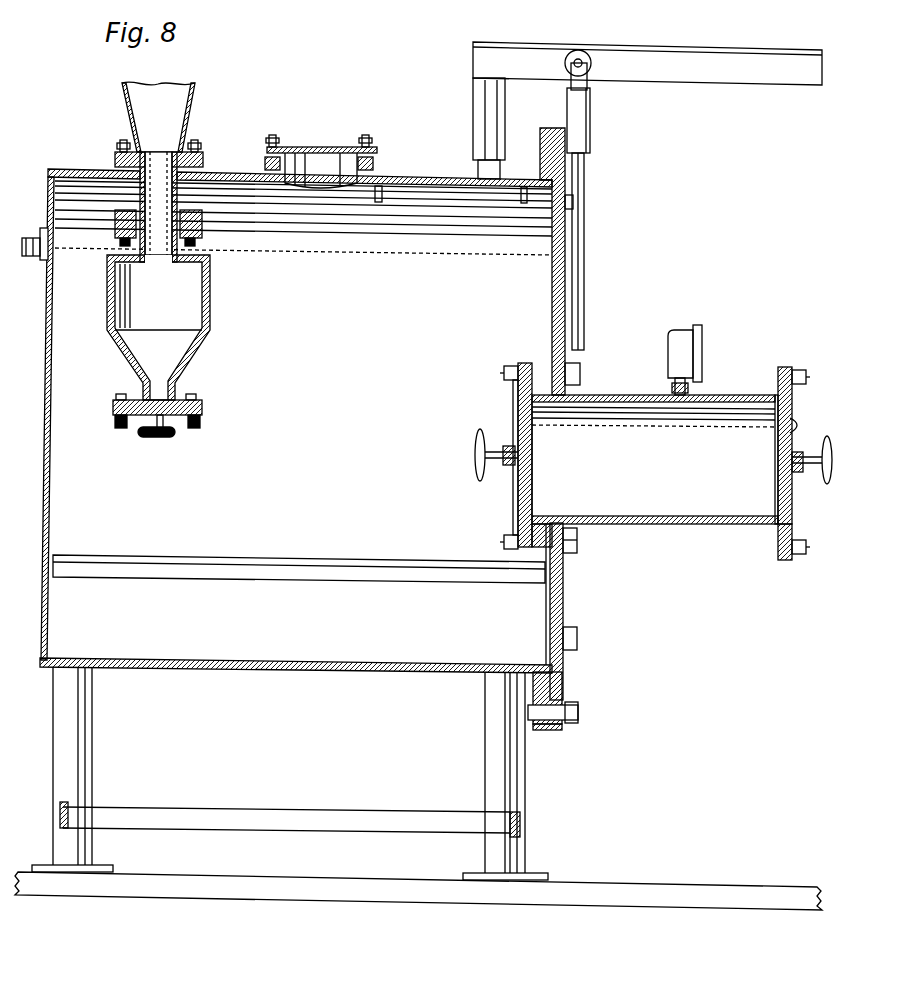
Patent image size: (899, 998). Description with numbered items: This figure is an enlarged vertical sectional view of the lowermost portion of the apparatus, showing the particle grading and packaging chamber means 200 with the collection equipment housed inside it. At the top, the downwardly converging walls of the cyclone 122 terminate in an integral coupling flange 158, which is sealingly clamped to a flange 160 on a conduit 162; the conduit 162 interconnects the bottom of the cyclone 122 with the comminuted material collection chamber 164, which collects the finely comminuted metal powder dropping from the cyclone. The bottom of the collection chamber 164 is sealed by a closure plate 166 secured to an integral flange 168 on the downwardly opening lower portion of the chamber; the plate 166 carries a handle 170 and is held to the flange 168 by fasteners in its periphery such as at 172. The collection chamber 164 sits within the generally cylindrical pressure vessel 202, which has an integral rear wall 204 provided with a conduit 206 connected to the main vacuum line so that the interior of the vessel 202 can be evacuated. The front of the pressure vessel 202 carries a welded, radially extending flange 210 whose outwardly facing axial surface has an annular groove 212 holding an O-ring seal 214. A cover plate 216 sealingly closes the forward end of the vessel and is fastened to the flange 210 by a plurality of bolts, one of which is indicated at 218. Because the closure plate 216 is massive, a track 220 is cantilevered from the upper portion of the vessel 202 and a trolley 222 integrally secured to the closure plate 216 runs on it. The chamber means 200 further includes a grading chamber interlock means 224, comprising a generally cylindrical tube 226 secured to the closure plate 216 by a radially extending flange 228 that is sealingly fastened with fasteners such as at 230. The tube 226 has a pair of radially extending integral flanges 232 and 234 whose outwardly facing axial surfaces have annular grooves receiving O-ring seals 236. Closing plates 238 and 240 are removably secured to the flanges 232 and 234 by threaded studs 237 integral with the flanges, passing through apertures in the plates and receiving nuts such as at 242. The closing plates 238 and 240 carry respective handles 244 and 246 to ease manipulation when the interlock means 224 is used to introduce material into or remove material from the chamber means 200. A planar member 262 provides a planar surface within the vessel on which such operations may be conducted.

The cyclone 122 is at (192, 100).
The coupling flange 158 is at (200, 151).
The flange 160 is at (200, 163).
The conduit 162 is at (187, 198).
The comminuted material collection chamber 164 is at (207, 312).
The closure plate 166 is at (178, 417).
The integral flange 168 is at (197, 400).
The handle 170 is at (157, 437).
The fasteners 172 is at (122, 417).
The particle grading and packaging chamber means 200 is at (383, 157).
The pressure vessel 202 is at (430, 180).
The rear wall 204 is at (48, 397).
The conduit 206 is at (42, 230).
The radially extending flange 210 is at (543, 732).
The annular groove 212 is at (552, 687).
The O-ring seal 214 is at (556, 163).
The cover plate 216 is at (560, 593).
The bolt 218 is at (578, 712).
The track 220 is at (613, 49).
The trolley 222 is at (588, 105).
The grading chamber interlock means 224 is at (684, 530).
The cylindrical tube 226 is at (598, 397).
The radially extending flange 228 is at (570, 560).
The fasteners 230 is at (577, 550).
The radially extending integral flange 232 is at (530, 363).
The radially extending integral flange 234 is at (780, 367).
The O-ring seals 236 is at (520, 387).
The threaded studs 237 is at (777, 547).
The closing plate 238 is at (520, 418).
The closing plate 240 is at (786, 425).
The nuts 242 is at (508, 552).
The handle 244 is at (476, 455).
The handle 246 is at (827, 485).
The planar member 262 is at (305, 565).